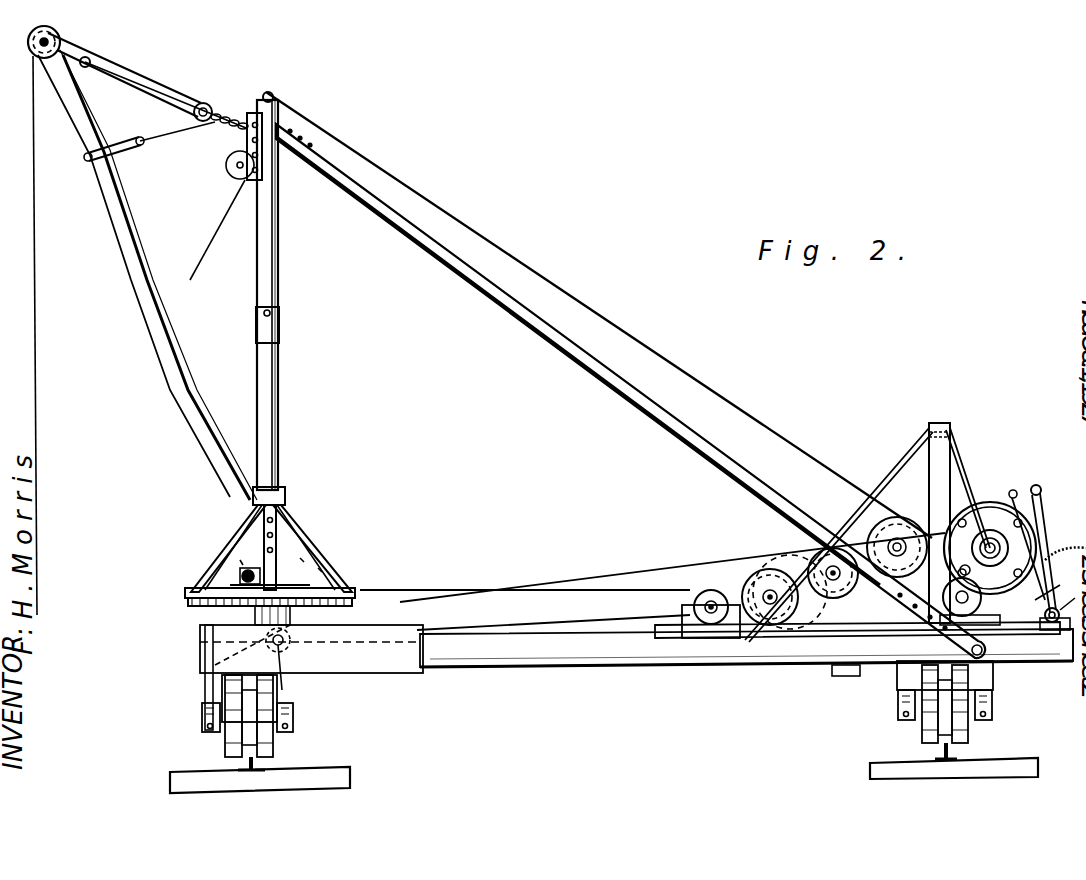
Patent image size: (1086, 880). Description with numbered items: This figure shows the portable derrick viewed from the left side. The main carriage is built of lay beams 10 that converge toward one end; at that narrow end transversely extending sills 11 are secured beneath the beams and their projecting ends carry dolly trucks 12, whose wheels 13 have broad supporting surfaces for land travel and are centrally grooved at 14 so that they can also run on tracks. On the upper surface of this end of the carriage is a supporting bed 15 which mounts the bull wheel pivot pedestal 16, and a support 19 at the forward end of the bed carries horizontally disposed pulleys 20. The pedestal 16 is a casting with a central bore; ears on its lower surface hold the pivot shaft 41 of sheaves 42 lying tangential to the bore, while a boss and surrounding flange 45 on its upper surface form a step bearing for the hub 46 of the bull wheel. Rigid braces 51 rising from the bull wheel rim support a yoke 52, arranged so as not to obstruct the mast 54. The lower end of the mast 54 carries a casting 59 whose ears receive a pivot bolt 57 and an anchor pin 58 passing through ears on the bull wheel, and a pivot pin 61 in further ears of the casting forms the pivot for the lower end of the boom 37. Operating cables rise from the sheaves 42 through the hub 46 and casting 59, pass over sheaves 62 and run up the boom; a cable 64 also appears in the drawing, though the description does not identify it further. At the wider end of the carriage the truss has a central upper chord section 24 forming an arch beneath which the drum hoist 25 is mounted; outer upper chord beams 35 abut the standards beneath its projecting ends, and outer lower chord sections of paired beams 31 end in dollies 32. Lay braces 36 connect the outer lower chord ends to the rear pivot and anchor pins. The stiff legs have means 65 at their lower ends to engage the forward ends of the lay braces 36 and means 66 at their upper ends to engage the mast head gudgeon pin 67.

The lay beams 10 is at (1050, 650).
The sills 11 is at (203, 703).
The dolly trucks 12 is at (250, 745).
The wheels 13 is at (946, 740).
The grooves 14 is at (270, 745).
The supporting bed 15 is at (237, 640).
The bull wheel pivot pedestal 16 is at (230, 614).
The support 19 is at (420, 650).
The pulleys 20 is at (405, 600).
The upper chord section 24 is at (940, 423).
The drum hoist 25 is at (800, 610).
The beams 31 is at (988, 688).
The dollies 32 is at (968, 735).
The beam 35 is at (935, 470).
The lay braces 36 is at (570, 666).
The boom 37 is at (150, 340).
The pivot shaft 41 is at (290, 690).
The sheaves 42 is at (215, 665).
The flange 45 is at (285, 645).
The hub 46 is at (340, 592).
The braces 51 is at (235, 585).
The yoke 52 is at (269, 512).
The mast 54 is at (280, 410).
The pivot bolt 57 is at (215, 585).
The anchor pin 58 is at (320, 570).
The casting 59 is at (300, 560).
The pivot pin 61 is at (245, 580).
The sheaves 62 is at (240, 560).
The cable 64 is at (577, 360).
The engaging means 65 is at (905, 666).
The engaging means 66 is at (300, 145).
The mast head gudgeon pin 67 is at (250, 118).